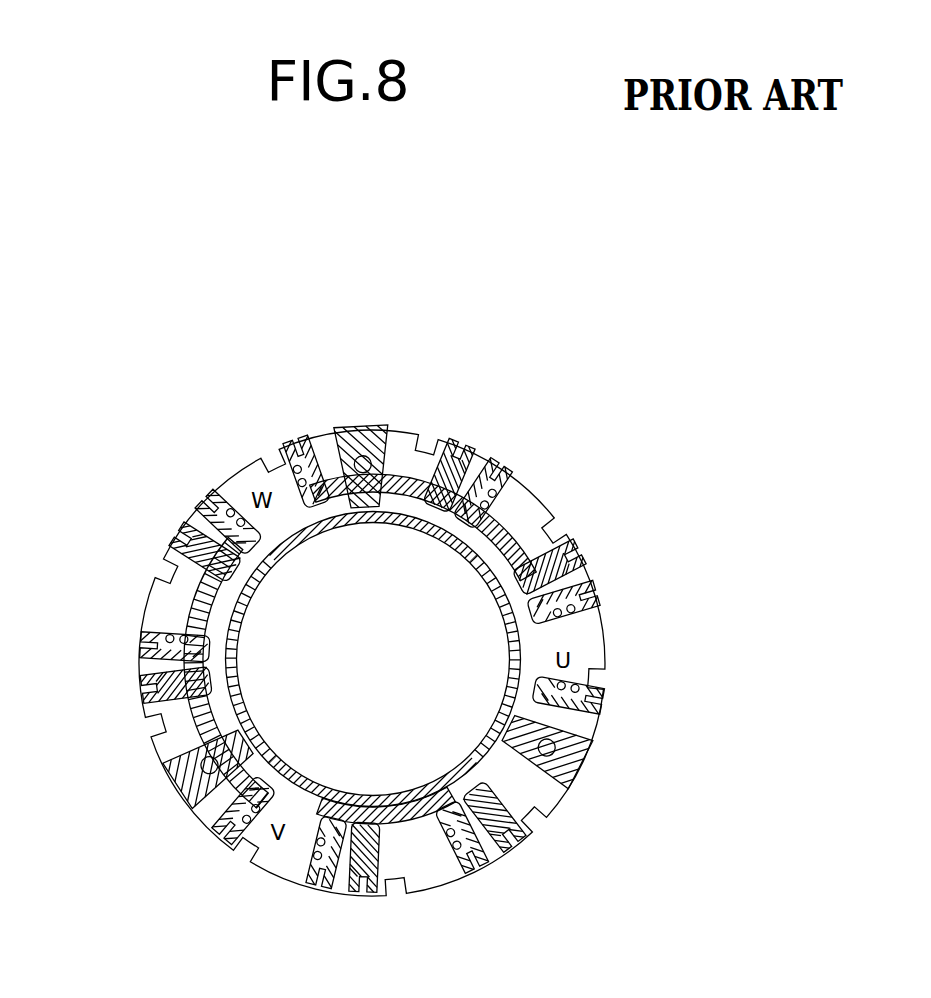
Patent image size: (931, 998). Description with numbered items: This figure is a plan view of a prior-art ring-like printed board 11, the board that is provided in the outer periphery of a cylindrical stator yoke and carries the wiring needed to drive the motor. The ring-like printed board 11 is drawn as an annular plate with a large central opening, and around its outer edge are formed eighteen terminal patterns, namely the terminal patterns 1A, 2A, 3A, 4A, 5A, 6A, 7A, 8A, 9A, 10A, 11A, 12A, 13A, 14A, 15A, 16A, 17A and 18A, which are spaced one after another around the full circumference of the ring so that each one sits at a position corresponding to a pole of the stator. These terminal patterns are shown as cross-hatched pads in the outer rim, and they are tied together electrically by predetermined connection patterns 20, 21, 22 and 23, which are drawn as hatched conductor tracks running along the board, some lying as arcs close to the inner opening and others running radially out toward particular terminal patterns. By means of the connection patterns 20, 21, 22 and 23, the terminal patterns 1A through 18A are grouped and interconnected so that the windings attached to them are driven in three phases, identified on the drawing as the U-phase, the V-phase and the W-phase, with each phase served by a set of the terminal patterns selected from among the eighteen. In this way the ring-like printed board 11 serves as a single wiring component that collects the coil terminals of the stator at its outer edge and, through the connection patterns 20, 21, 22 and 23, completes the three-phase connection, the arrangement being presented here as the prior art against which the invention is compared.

The ring-like printed board 11 is at (128, 737).
The connection pattern 20 is at (447, 777).
The connection pattern 21 is at (523, 547).
The connection pattern 22 is at (403, 837).
The connection pattern 23 is at (197, 597).
The terminal pattern 1A is at (468, 852).
The terminal pattern 2A is at (363, 872).
The terminal pattern 3A is at (323, 868).
The terminal pattern 4A is at (236, 822).
The terminal pattern 5A is at (203, 769).
The terminal pattern 6A is at (158, 685).
The terminal pattern 7A is at (153, 645).
The terminal pattern 8A is at (189, 548).
The terminal pattern 9A is at (217, 518).
The terminal pattern 10A is at (303, 457).
The terminal pattern 11A is at (358, 454).
The terminal pattern 12A is at (456, 464).
The terminal pattern 13A is at (495, 484).
The terminal pattern 14A is at (572, 567).
The terminal pattern 15A is at (588, 602).
The terminal pattern 16A is at (594, 701).
The terminal pattern 17A is at (566, 746).
The terminal pattern 18A is at (511, 827).